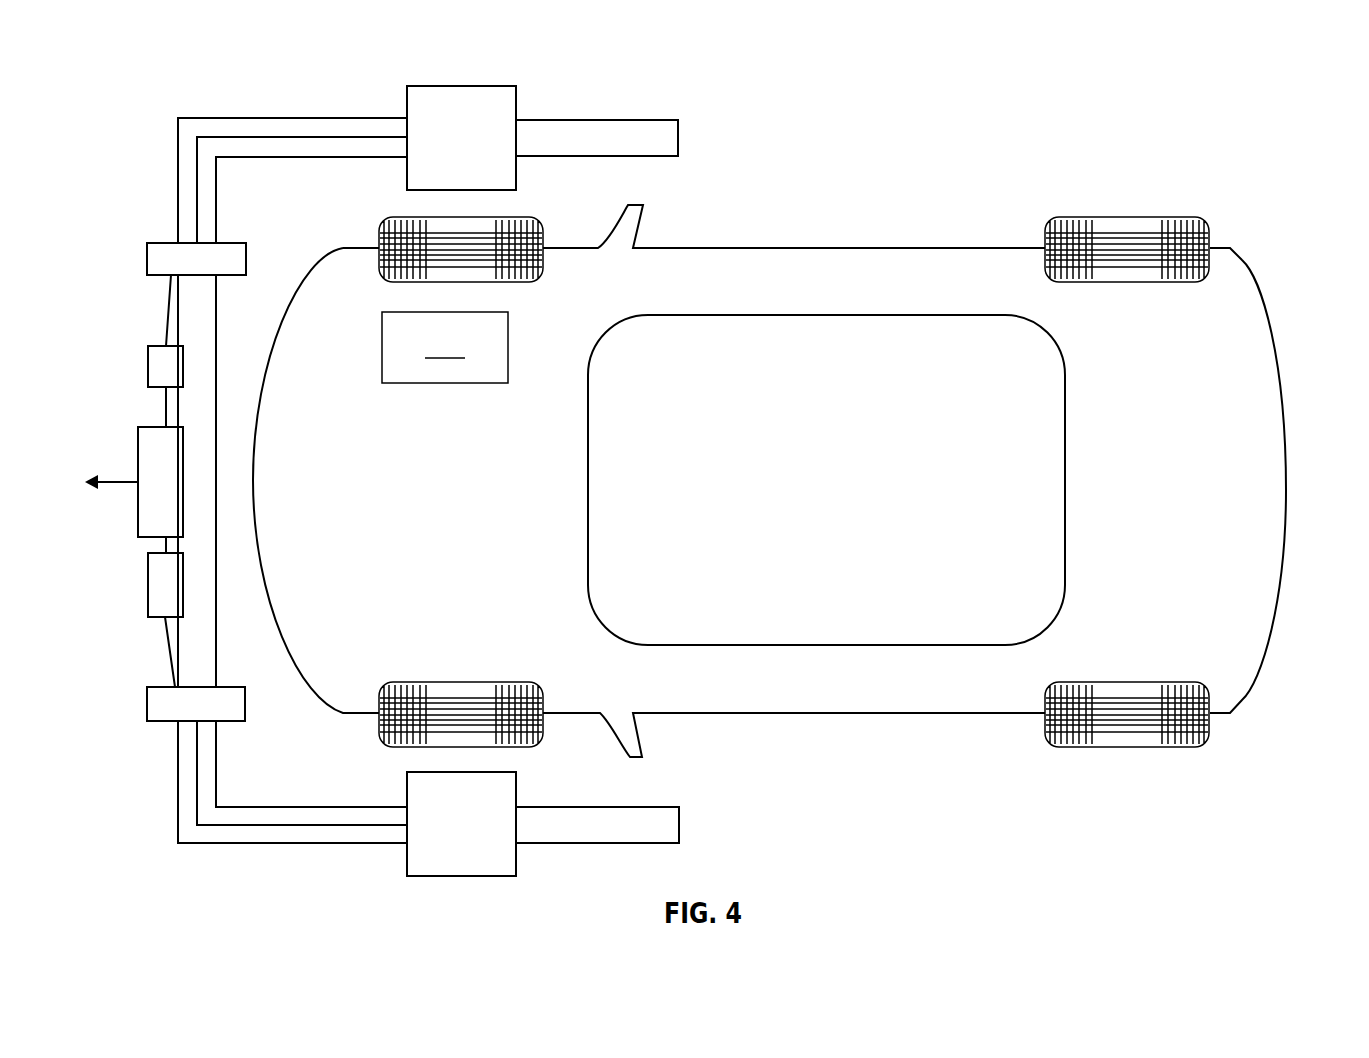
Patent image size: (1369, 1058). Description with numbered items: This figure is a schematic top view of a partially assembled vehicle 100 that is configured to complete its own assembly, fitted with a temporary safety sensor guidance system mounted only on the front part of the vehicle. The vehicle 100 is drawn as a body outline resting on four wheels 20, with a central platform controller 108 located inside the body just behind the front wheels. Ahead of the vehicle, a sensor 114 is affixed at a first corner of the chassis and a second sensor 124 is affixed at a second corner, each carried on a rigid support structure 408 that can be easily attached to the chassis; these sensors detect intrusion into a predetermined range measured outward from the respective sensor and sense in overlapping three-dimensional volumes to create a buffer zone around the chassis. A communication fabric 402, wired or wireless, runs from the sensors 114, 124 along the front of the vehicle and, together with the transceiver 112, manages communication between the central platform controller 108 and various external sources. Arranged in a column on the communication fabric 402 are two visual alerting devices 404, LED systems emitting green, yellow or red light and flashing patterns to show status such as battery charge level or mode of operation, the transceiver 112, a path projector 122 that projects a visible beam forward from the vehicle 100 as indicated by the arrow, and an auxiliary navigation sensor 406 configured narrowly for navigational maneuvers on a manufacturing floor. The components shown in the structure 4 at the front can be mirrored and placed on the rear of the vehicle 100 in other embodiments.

The partially assembled vehicle 100 is at (1258, 340).
The wheels 20 is at (507, 216).
The central platform controller 108 is at (445, 347).
The sensor 114 is at (463, 85).
The structure 4 is at (598, 127).
The second sensor 124 is at (488, 857).
The rigid support structure 408 is at (588, 833).
The communication fabric 402 is at (288, 137).
The visual alerting device 404 is at (147, 258).
The transceiver 112 is at (148, 367).
The path projector 122 is at (138, 513).
The auxiliary navigation sensor 406 is at (148, 587).